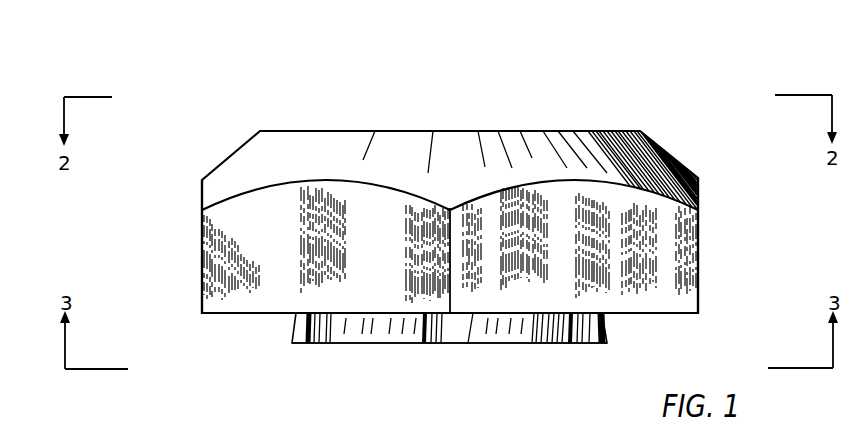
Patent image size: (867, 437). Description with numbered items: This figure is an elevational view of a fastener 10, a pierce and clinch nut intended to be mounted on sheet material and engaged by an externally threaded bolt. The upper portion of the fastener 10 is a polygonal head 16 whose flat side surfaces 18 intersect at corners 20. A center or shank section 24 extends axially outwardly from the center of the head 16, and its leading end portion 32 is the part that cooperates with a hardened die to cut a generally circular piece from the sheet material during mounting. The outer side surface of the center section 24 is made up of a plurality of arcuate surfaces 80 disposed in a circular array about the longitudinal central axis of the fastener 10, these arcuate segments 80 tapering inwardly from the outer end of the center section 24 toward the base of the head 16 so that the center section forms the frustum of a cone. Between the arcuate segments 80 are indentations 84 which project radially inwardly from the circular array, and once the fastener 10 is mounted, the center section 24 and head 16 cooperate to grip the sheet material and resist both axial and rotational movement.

The fastener 10 is at (455, 114).
The polygonal head 16 is at (670, 142).
The flat side surfaces 18 is at (223, 243).
The corners 20 is at (201, 291).
The center or shank section 24 is at (498, 355).
The leading end portion 32 is at (288, 348).
The arcuate surfaces 80 is at (362, 330).
The indentations 84 is at (314, 341).